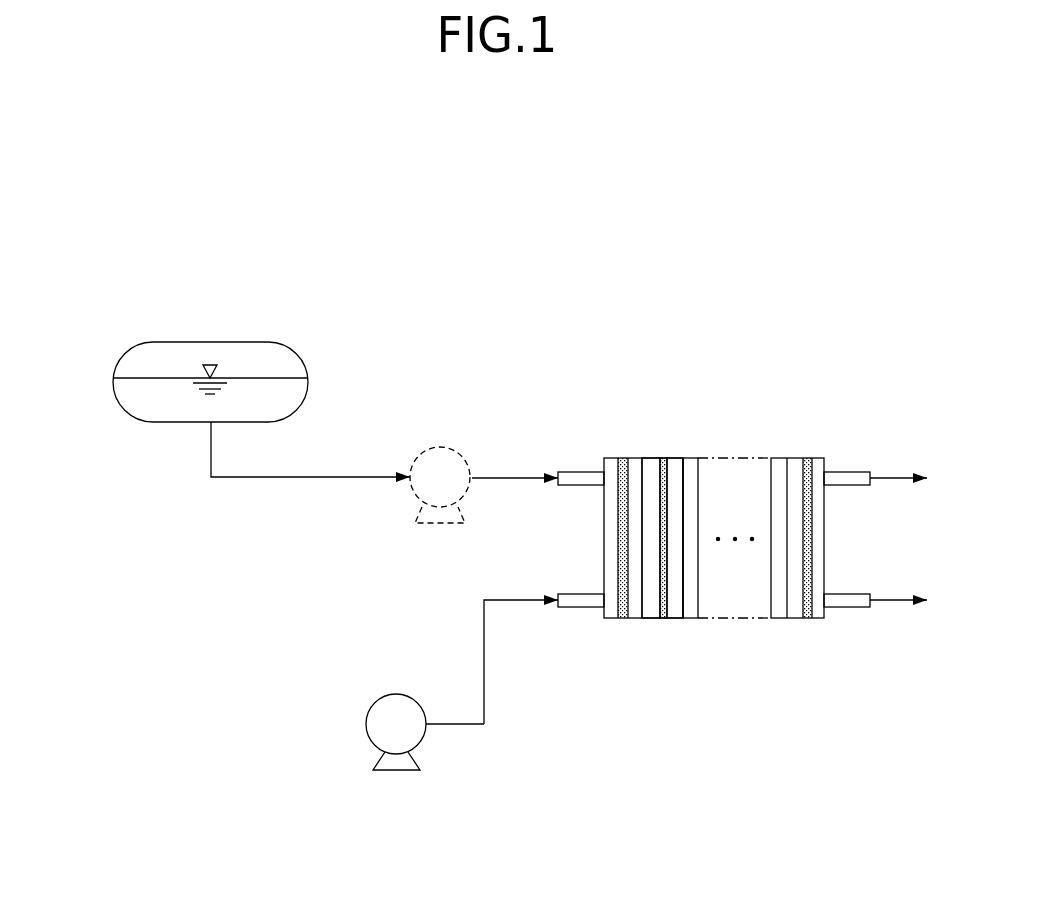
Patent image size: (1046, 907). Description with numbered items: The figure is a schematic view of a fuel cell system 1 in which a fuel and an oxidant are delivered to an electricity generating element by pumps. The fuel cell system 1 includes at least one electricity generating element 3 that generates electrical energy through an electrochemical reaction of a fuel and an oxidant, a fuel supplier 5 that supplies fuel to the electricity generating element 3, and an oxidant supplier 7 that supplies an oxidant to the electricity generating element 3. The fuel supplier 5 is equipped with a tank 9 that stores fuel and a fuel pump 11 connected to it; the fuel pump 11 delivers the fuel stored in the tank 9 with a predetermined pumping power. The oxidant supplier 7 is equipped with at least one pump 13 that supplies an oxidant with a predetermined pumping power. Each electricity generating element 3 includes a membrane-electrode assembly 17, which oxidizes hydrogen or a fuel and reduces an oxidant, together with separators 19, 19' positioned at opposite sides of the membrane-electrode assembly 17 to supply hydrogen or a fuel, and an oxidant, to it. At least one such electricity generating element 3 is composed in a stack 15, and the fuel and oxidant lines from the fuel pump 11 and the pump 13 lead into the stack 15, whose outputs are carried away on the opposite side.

The fuel cell system 1 is at (665, 363).
The electricity generating element 3 is at (717, 708).
The fuel supplier 5 is at (125, 330).
The oxidant supplier 7 is at (362, 693).
The tank 9 is at (249, 342).
The fuel pump 11 is at (430, 450).
The pump 13 is at (370, 735).
The stack 15 is at (787, 450).
The membrane-electrode assembly 17 is at (662, 612).
The separator 19 is at (629, 583).
The separator 19' is at (700, 583).